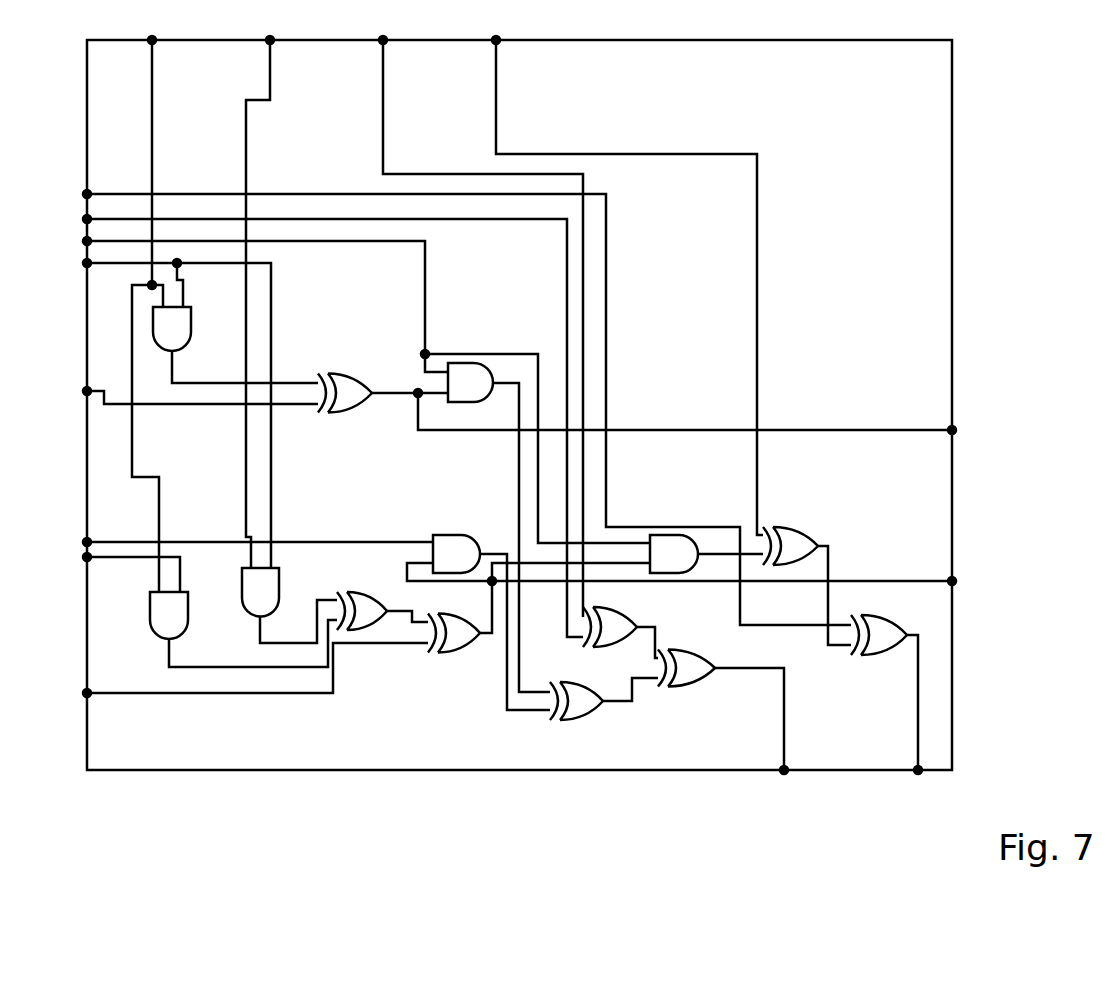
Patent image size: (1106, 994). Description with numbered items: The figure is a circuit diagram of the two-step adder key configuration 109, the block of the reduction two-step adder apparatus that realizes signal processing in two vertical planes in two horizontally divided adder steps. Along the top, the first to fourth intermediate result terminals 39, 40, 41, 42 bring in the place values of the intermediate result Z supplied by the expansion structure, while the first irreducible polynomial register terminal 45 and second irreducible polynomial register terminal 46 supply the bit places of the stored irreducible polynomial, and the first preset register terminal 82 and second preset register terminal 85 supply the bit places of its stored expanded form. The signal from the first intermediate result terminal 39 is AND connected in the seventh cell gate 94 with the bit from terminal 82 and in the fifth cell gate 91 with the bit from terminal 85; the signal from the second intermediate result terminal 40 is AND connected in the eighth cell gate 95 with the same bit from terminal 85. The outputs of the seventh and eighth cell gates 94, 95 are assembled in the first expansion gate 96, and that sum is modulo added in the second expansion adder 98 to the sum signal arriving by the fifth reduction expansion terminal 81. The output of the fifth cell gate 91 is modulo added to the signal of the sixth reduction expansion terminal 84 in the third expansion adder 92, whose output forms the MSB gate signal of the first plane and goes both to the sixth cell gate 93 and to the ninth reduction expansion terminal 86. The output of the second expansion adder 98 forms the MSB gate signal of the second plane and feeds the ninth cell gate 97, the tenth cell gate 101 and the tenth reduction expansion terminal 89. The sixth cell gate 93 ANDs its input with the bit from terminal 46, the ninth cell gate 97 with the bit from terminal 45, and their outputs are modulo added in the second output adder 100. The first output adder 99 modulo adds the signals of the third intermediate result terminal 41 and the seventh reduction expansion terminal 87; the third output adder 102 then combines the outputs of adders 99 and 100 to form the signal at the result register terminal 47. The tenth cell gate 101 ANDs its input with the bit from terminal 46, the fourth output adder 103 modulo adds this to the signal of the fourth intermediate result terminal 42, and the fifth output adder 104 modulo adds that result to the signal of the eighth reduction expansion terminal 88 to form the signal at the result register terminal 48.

The first intermediate result terminal 39 is at (151, 299).
The second intermediate result terminal 40 is at (267, 287).
The third intermediate result terminal 41 is at (476, 312).
The fourth intermediate result terminal 42 is at (622, 271).
The first irreducible polynomial register terminal 45 is at (238, 542).
The second irreducible polynomial register terminal 46 is at (347, 385).
The result register terminal E(n-1) 47 is at (787, 789).
The result register terminal E(n-2) 48 is at (920, 789).
The fifth reduction expansion terminal 81 is at (236, 675).
The first preset register terminal 82 is at (112, 567).
The sixth reduction expansion terminal 84 is at (181, 391).
The second preset register terminal 85 is at (157, 408).
The ninth reduction expansion terminal 86 is at (704, 417).
The seventh reduction expansion terminal 87 is at (313, 421).
The eighth reduction expansion terminal 88 is at (447, 402).
The tenth reduction expansion terminal 89 is at (700, 581).
The fifth cell gate 91 is at (235, 343).
The third expansion adder 92 is at (383, 385).
The sixth cell gate 93 is at (499, 527).
The seventh cell gate 94 is at (243, 629).
The eighth cell gate 95 is at (289, 605).
The first expansion gate 96 is at (382, 598).
The ninth cell gate 97 is at (491, 614).
The second expansion adder 98 is at (539, 608).
The first output adder 99 is at (620, 621).
The second output adder 100 is at (604, 690).
The tenth cell gate 101 is at (706, 551).
The third output adder 102 is at (721, 701).
The fourth output adder 103 is at (808, 576).
The fifth output adder 104 is at (890, 682).
The two-step adder key configuration 109 is at (519, 405).